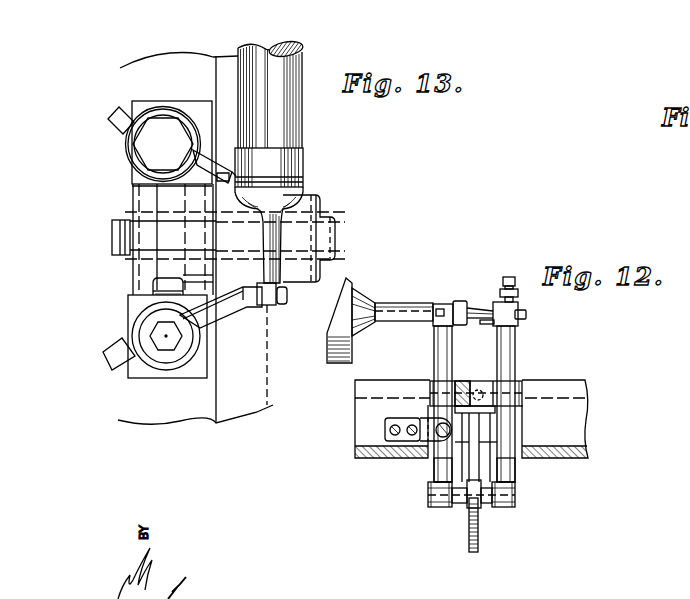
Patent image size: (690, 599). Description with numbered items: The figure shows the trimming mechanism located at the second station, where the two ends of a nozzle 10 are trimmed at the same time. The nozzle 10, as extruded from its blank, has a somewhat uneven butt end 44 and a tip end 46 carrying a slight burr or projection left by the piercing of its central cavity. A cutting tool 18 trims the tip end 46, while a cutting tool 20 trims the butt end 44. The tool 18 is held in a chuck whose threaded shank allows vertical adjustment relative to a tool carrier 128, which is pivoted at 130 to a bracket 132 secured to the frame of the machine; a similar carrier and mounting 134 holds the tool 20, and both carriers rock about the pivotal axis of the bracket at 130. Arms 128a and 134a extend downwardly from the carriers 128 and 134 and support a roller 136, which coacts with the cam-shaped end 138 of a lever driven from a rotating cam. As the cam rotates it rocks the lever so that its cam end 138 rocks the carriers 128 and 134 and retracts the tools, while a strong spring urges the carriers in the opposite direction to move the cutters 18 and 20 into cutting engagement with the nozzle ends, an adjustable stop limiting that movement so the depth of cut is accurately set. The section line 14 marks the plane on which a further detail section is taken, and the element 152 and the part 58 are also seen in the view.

In FIG. 13, the nozzle 10 is at (281, 238).
In FIG. 13, the section line 14 is at (168, 236).
In FIG. 13, the cutting tool 18 is at (248, 308).
In FIG. 12, the cutting tool 18 is at (527, 314).
In FIG. 13, the cutting tool 20 is at (220, 171).
In FIG. 12, the cutting tool 20 is at (456, 303).
In FIG. 13, the butt end 44 is at (305, 174).
In FIG. 13, the tip end 46 is at (288, 297).
In FIG. 12, the base plate 58 is at (471, 419).
In FIG. 12, the tool carrier 128 is at (517, 356).
In FIG. 12, the arm 128a is at (517, 471).
In FIG. 12, the pivot 130 is at (524, 394).
In FIG. 12, the bracket 132 is at (472, 381).
In FIG. 12, the tool carrier 134 is at (434, 362).
In FIG. 12, the arm 134a is at (437, 472).
In FIG. 12, the roller 136 is at (481, 504).
In FIG. 12, the cam-shaped end 138 is at (468, 529).
In FIG. 12, the clamp 152 is at (440, 420).